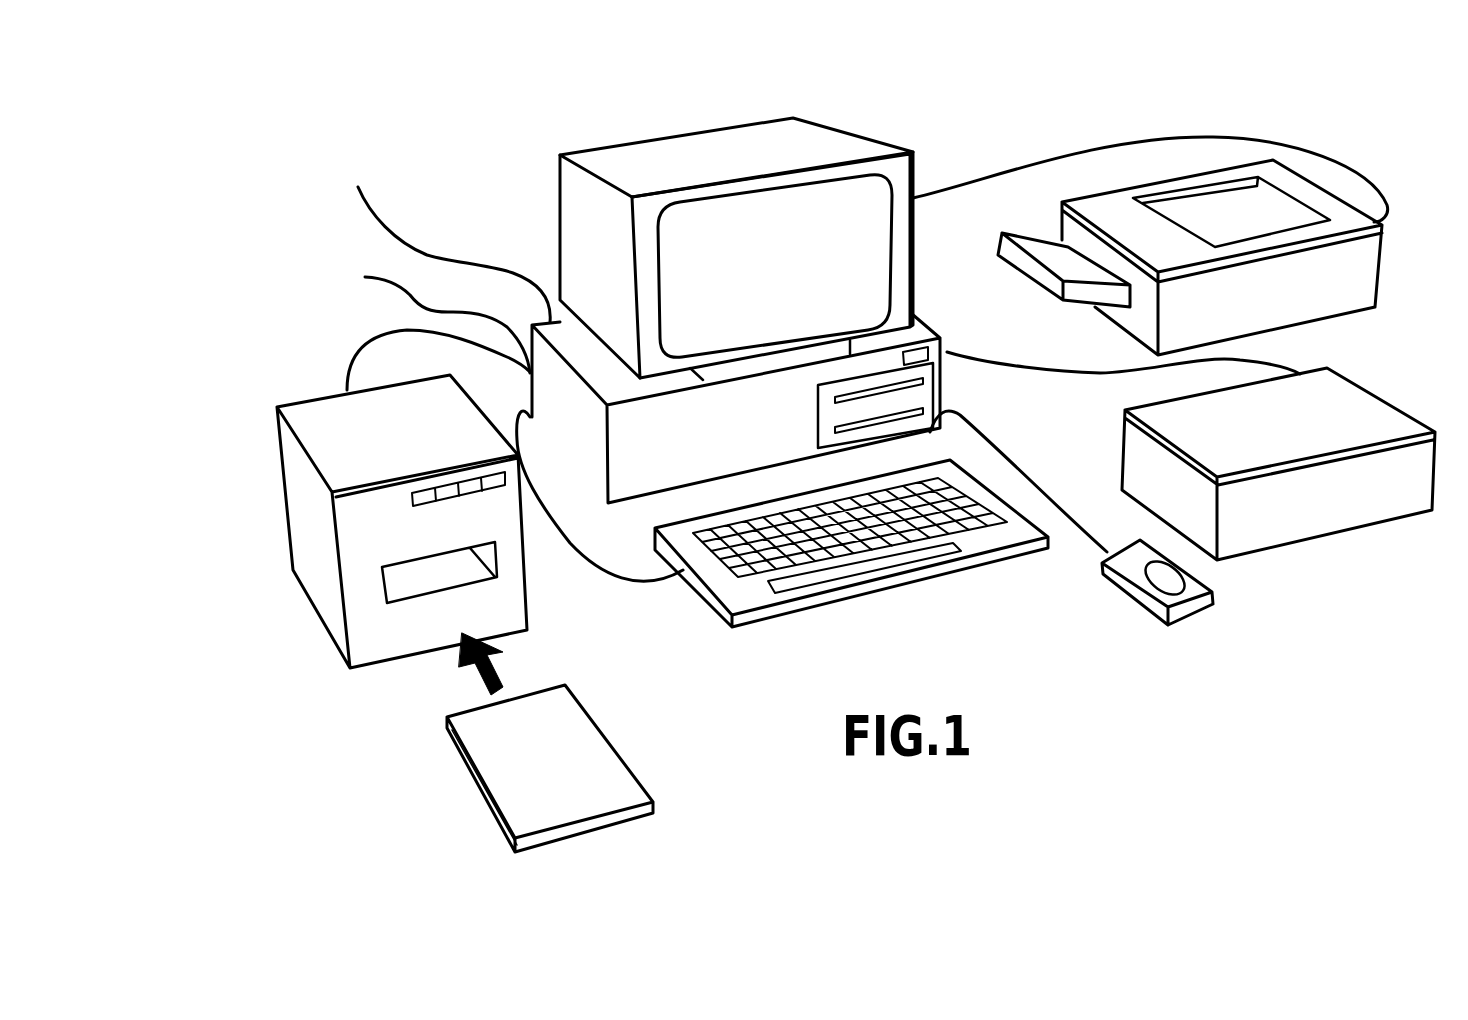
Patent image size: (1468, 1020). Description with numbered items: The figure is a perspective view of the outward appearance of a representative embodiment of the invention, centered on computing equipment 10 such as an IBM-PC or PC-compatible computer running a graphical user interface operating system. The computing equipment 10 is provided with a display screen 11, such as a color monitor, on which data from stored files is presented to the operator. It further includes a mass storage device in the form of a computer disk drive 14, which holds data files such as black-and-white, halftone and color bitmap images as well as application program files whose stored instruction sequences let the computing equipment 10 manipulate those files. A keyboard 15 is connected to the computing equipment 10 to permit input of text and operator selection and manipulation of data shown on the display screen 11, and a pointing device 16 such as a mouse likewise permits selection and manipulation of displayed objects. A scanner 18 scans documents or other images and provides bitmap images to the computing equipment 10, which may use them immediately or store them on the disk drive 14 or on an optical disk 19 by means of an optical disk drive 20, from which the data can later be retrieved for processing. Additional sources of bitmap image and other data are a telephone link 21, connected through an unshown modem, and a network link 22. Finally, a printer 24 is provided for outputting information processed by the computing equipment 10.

The computing equipment 10 is at (992, 128).
The display screen 11 is at (623, 122).
The computer disk drive 14 is at (970, 433).
The keyboard 15 is at (790, 613).
The pointing device 16 is at (1187, 618).
The scanner 18 is at (1385, 402).
The optical disk 19 is at (477, 785).
The optical disk drive 20 is at (287, 513).
The telephone link 21 is at (430, 306).
The network link 22 is at (447, 255).
The printer 24 is at (1382, 277).